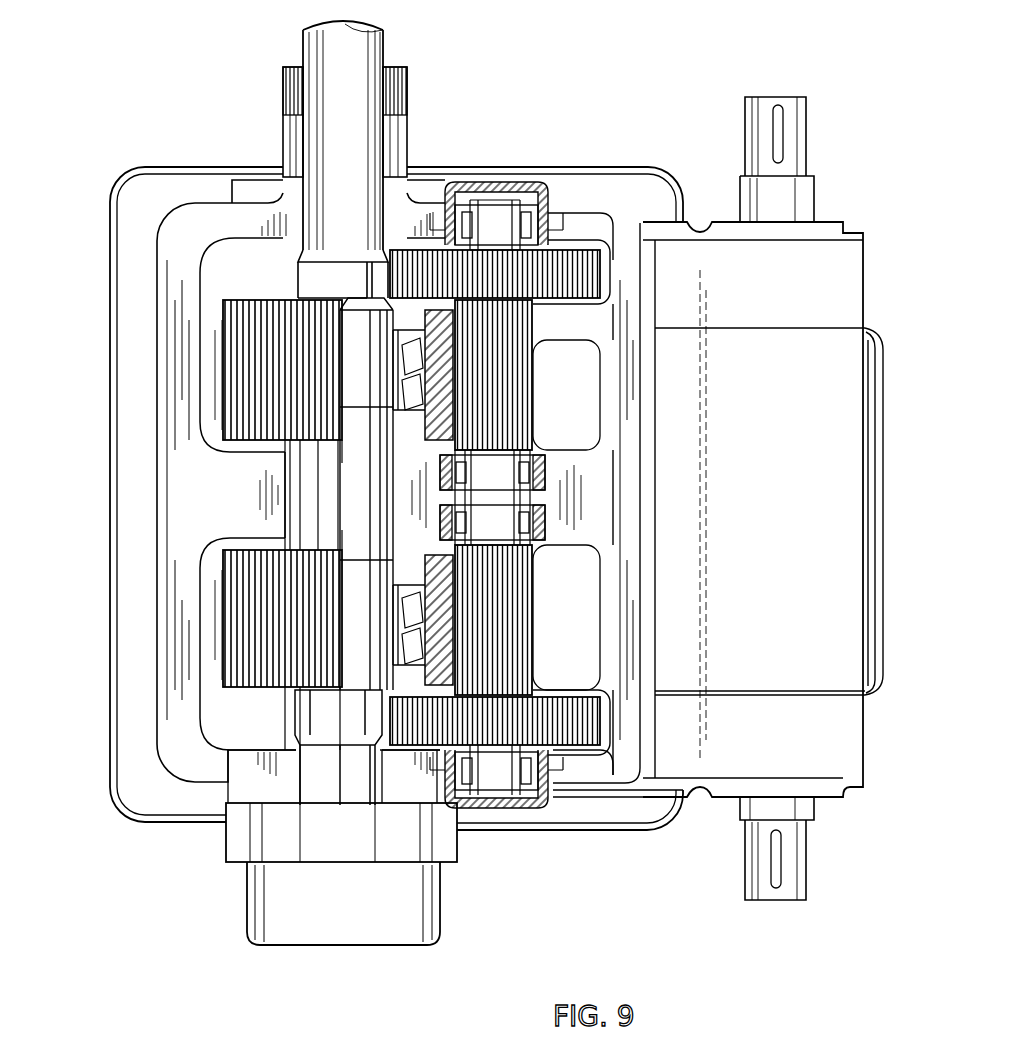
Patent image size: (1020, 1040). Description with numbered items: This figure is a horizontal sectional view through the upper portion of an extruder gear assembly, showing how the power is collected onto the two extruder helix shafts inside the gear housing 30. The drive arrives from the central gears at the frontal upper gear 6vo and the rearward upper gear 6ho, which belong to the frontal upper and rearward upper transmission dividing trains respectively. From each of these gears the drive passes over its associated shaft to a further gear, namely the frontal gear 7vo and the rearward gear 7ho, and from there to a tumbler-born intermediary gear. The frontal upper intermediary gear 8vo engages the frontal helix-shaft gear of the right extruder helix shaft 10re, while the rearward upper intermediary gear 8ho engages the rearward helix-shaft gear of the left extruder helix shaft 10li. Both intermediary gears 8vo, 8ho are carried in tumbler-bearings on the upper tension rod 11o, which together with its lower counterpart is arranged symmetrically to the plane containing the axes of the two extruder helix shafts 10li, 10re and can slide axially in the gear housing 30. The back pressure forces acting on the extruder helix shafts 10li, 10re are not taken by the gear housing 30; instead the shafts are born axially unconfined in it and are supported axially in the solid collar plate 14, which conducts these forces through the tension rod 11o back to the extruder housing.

The gear housing 30 is at (106, 680).
The upper tension rod 11o is at (353, 68).
The right extruder helix shaft 10re is at (300, 133).
The left extruder helix shaft 10li is at (395, 138).
The frontal upper intermediary gear 8vo is at (292, 356).
The rearward upper intermediary gear 8ho is at (287, 632).
The frontal upper gear 6vo is at (558, 278).
The rearward upper gear 6ho is at (545, 722).
The frontal upper gear 7 7vo is at (505, 402).
The rearward upper gear 7 7ho is at (505, 632).
The collar plate 14 is at (403, 838).